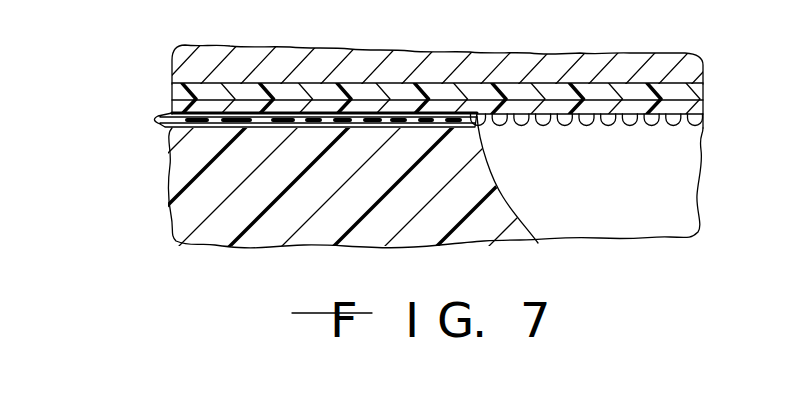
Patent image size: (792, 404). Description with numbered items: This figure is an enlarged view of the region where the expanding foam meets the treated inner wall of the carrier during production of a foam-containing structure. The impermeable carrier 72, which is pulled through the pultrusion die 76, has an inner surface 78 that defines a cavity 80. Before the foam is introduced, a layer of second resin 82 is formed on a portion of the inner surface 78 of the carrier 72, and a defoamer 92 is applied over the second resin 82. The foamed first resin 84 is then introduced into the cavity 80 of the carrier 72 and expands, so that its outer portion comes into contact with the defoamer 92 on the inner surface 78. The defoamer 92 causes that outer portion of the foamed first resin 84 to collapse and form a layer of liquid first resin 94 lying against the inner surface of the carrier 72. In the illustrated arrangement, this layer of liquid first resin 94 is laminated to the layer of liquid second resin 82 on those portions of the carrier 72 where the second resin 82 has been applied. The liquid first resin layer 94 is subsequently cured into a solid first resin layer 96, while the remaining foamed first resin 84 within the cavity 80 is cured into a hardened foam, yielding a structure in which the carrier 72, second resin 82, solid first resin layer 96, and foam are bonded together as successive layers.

The impermeable carrier 72 is at (708, 97).
The pultrusion die 76 is at (600, 70).
The inner surface 78 is at (703, 112).
The cavity 80 is at (650, 227).
The second resin 82 is at (172, 108).
The foamed first resin 84 is at (472, 194).
The defoamer 92 is at (653, 121).
The layer of liquid first resin 94 is at (484, 148).
The solid first resin layer 96 is at (163, 127).